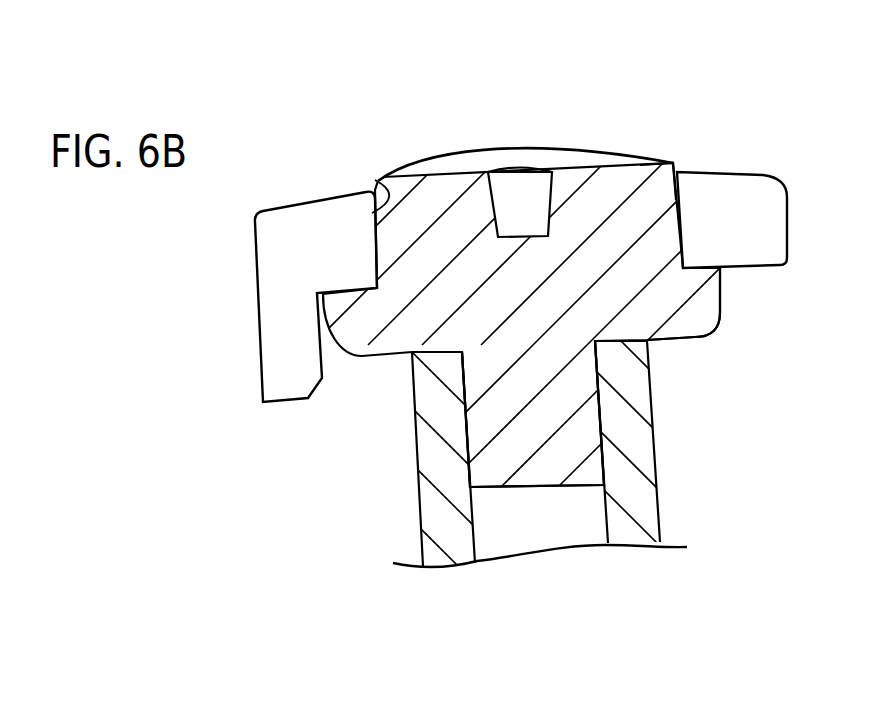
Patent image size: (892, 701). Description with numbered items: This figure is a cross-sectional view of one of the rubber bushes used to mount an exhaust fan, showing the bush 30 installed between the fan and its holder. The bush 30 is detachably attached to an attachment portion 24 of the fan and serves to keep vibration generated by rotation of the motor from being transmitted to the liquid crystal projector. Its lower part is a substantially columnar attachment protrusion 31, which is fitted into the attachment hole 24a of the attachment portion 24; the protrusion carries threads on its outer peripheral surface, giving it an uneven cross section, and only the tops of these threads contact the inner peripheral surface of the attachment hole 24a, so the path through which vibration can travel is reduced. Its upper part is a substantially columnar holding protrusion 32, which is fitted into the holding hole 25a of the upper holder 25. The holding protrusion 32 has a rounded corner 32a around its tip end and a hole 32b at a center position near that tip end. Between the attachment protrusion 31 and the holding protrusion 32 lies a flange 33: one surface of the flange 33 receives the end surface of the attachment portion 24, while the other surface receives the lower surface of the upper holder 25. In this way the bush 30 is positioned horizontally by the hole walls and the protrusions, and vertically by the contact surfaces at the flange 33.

The bush 30 is at (434, 81).
The attachment protrusion 31 is at (547, 421).
The holding protrusion 32 is at (612, 188).
The rounded corner 32a is at (675, 163).
The hole 32b is at (520, 195).
The flange 33 is at (695, 307).
The upper holder 25 is at (305, 250).
The holding hole 25a is at (383, 180).
The attachment portion 24 is at (433, 505).
The attachment hole 24a is at (533, 518).